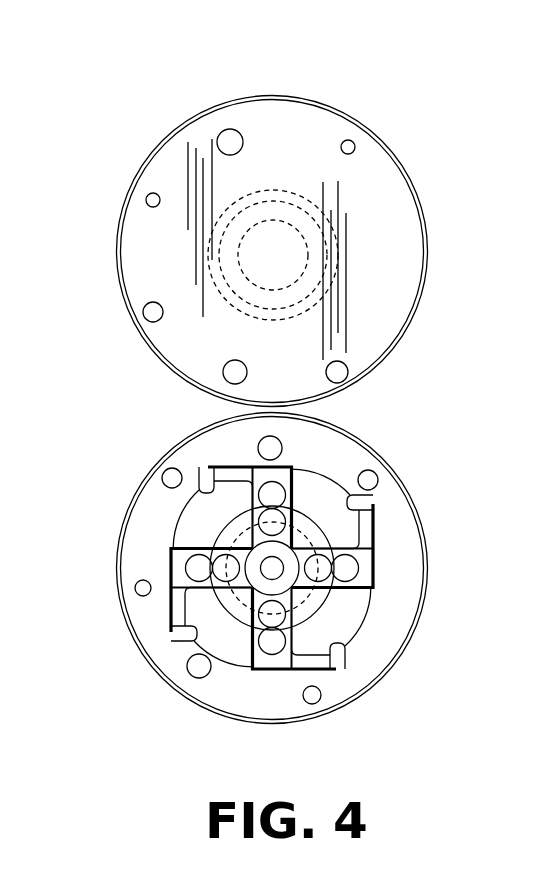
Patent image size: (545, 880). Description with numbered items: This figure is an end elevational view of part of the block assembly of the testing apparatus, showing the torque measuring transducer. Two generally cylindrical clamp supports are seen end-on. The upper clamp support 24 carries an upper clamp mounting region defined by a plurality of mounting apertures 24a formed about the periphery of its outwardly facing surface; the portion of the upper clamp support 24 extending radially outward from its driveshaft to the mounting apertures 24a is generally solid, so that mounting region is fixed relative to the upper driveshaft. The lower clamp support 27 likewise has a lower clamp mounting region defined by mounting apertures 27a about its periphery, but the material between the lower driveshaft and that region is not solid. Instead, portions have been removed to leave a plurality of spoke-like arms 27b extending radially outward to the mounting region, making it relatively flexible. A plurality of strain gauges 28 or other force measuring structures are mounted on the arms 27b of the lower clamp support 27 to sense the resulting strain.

The upper clamp support 24 is at (410, 215).
The mounting apertures 24a is at (232, 140).
The lower clamp support 27 is at (405, 555).
The mounting apertures 27a is at (275, 448).
The spoke-like arms 27b is at (200, 467).
The strain gauges 28 is at (230, 465).